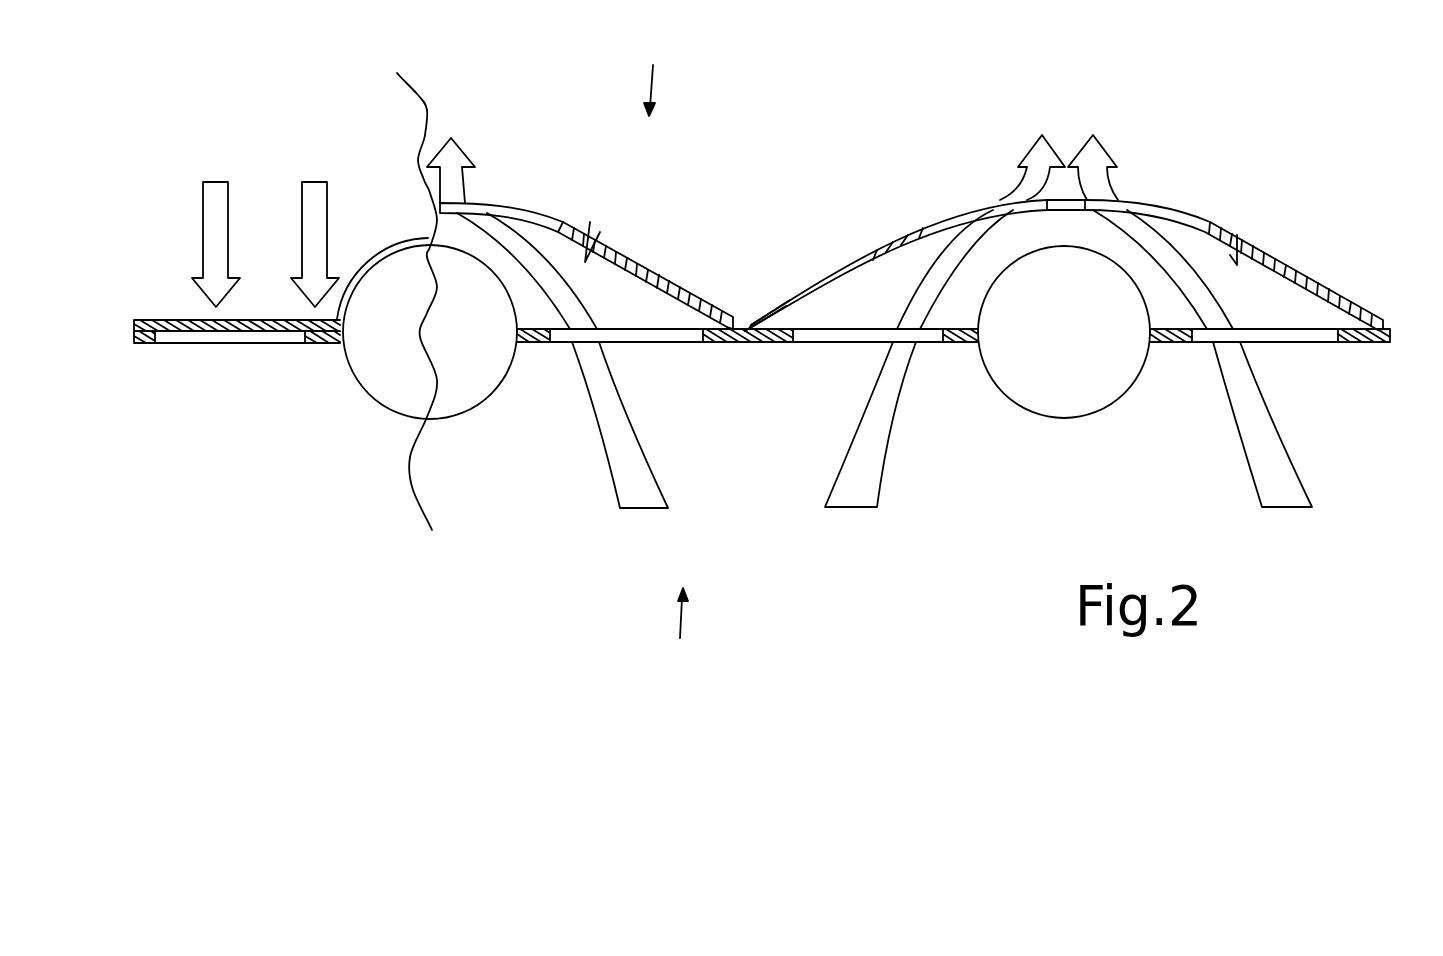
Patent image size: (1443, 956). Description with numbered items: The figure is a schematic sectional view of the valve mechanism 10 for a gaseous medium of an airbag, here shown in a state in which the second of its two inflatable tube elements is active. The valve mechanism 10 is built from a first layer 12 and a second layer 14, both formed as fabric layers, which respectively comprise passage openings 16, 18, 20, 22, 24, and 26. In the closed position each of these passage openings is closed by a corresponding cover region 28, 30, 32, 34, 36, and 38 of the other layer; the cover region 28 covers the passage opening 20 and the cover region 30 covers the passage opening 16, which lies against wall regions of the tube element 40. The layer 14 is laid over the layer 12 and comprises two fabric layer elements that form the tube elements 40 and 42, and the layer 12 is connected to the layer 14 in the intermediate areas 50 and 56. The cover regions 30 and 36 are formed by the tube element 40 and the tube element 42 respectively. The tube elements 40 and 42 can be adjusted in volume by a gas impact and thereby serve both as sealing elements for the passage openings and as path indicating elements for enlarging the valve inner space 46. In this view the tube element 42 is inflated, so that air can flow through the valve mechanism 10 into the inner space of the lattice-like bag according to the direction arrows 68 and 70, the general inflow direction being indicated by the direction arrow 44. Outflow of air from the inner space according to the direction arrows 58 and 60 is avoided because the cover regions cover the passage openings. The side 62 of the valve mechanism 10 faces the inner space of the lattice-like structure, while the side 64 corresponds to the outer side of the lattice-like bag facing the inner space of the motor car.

The valve mechanism 10 is at (1100, 539).
The first layer 12 is at (658, 262).
The second layer 14 is at (740, 345).
The passage opening 16 is at (530, 212).
The passage opening 18 is at (1163, 205).
The passage opening 20 is at (280, 348).
The passage opening 22 is at (680, 345).
The passage opening 24 is at (842, 345).
The passage opening 26 is at (1318, 333).
The cover region 28 is at (262, 325).
The cover region 30 is at (478, 262).
The cover region 32 is at (705, 292).
The cover region 34 is at (877, 245).
The cover region 36 is at (1118, 262).
The cover region 38 is at (1323, 290).
The tube element 40 is at (477, 385).
The tube element 42 is at (1020, 372).
The direction arrow 44 is at (645, 488).
The valve inner space 46 is at (585, 262).
The intermediate area 50 is at (790, 283).
The intermediate area 56 is at (1389, 295).
The direction arrow 58 is at (218, 178).
The direction arrow 60 is at (317, 178).
The side 62 is at (653, 73).
The side 64 is at (681, 633).
The direction arrow 68 is at (857, 490).
The direction arrow 70 is at (1287, 490).